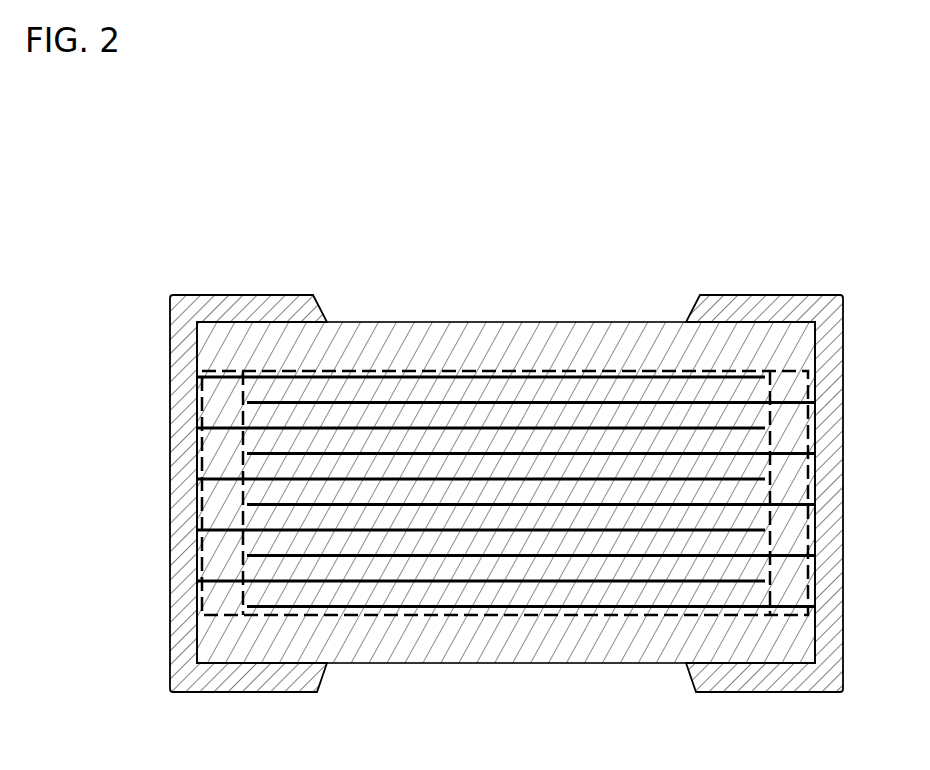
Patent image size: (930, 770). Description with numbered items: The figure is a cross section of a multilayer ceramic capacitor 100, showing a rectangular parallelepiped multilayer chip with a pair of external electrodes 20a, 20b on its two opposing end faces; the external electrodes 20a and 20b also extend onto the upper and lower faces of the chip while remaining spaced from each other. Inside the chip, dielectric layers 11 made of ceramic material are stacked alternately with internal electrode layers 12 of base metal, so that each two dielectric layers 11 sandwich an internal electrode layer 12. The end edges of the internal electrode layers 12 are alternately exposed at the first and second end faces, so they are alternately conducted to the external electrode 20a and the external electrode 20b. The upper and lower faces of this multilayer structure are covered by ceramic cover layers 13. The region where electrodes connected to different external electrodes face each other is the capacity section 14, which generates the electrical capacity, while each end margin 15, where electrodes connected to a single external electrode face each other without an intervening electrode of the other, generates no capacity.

The multilayer ceramic capacitor 100 is at (738, 237).
The dielectric layer 11 is at (630, 568).
The internal electrode layer 12 is at (485, 533).
The cover layer 13 is at (397, 338).
The capacity section 14 is at (531, 371).
The end margin 15 is at (222, 370).
The external electrode 20a is at (197, 295).
The external electrode 20b is at (808, 295).